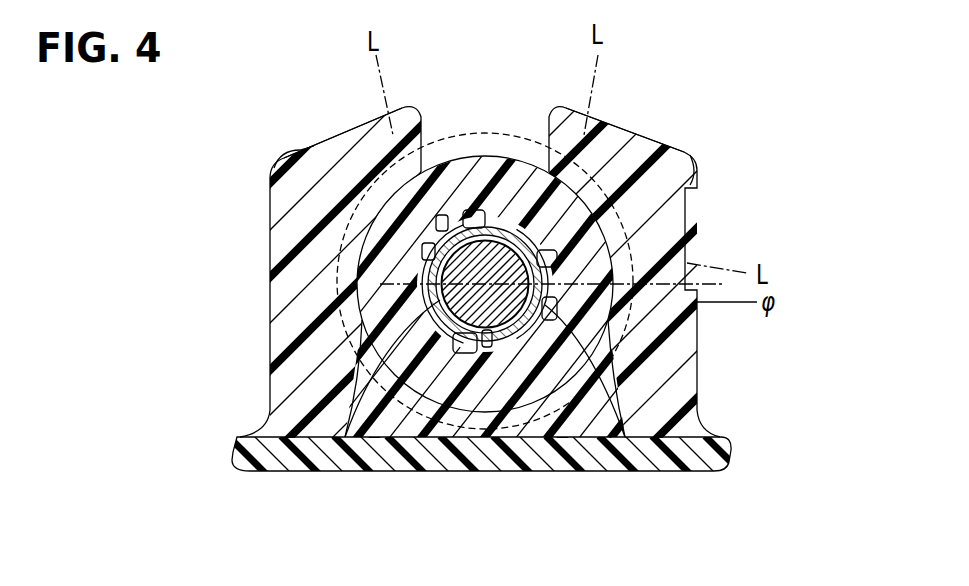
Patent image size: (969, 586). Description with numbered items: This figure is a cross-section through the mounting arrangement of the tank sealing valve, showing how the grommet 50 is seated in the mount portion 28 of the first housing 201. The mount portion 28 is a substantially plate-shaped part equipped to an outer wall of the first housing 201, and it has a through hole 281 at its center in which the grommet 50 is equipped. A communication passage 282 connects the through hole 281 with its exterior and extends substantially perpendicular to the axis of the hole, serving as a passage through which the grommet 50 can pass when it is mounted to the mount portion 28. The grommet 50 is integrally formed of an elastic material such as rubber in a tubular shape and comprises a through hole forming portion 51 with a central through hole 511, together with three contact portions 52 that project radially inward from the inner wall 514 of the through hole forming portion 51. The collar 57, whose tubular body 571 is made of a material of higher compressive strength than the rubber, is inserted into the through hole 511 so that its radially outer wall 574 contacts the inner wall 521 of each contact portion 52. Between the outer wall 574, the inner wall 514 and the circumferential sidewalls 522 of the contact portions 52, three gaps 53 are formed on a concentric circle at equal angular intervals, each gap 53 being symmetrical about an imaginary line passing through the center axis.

The mount portion 28 is at (697, 356).
The through hole 281 is at (330, 372).
The communication passage 282 is at (452, 205).
The first housing 201 is at (705, 447).
The grommet 50 is at (620, 347).
The through hole forming portion 51 is at (627, 303).
The through hole 511 is at (500, 230).
The inner wall 514 is at (462, 212).
The contact portion 52 is at (560, 232).
The inner wall 521 is at (430, 270).
The sidewall 522 is at (300, 153).
The gap 53 is at (440, 232).
The collar 57 is at (435, 250).
The body 571 is at (440, 332).
The outer wall 574 is at (530, 250).